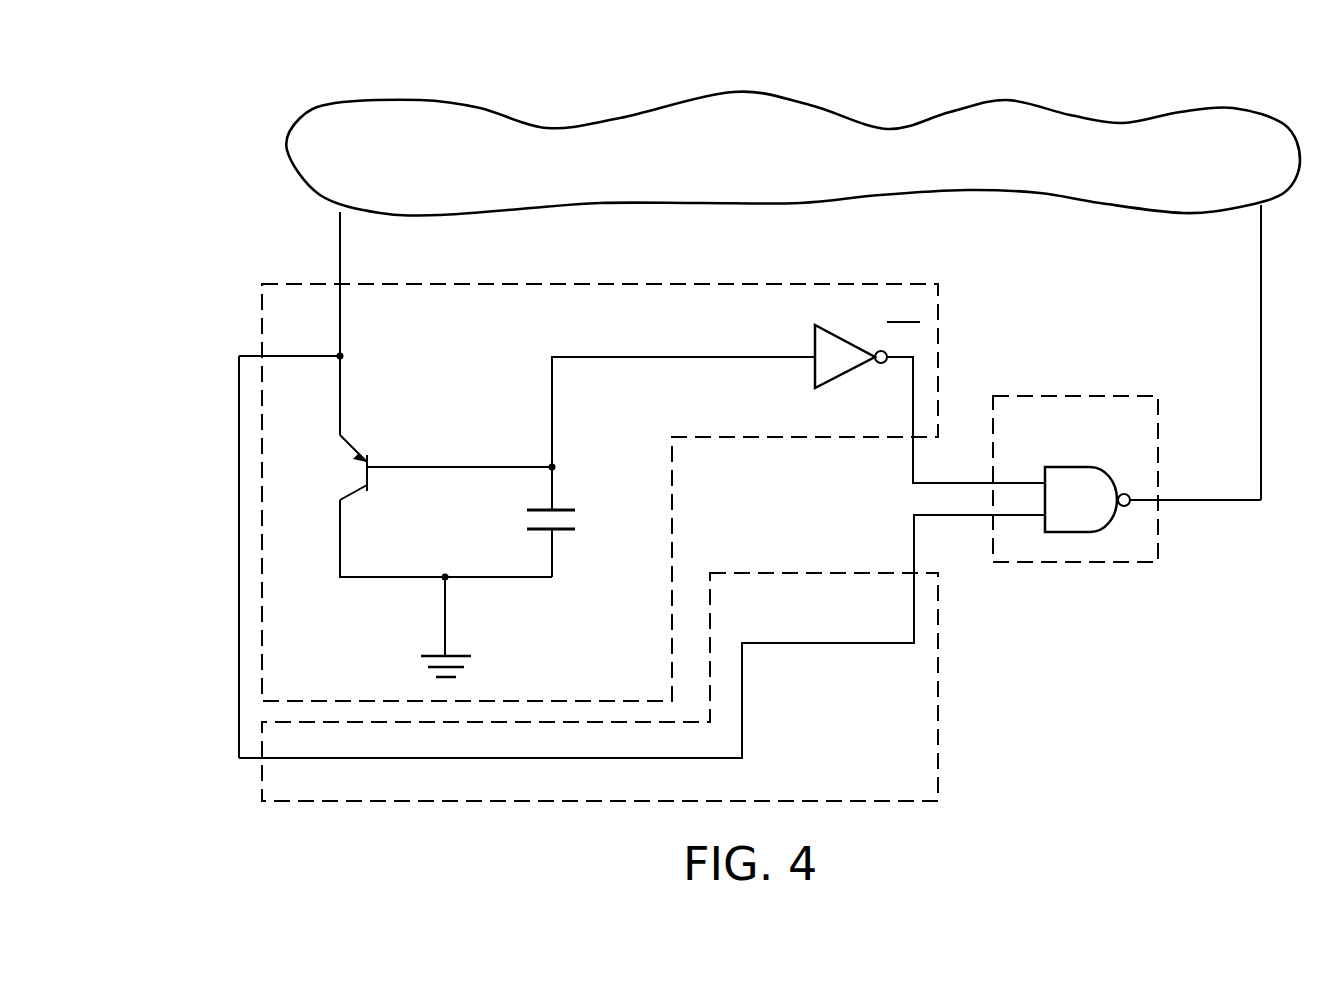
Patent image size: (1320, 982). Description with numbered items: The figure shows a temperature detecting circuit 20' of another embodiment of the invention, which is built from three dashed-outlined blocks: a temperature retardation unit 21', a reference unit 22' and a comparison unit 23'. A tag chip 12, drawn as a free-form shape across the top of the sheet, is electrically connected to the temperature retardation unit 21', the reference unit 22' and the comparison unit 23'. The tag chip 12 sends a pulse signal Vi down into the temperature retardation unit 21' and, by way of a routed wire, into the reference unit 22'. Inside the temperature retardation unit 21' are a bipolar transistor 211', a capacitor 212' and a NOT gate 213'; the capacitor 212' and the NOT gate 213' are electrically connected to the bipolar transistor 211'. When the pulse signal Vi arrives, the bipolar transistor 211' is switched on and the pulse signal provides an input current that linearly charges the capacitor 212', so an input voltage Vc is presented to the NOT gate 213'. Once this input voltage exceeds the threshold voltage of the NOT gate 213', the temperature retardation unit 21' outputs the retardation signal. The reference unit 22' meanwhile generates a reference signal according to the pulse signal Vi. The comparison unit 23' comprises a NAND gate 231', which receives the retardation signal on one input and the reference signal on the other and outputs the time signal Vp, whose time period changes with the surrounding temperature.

The temperature detecting circuit 20' is at (722, 440).
The tag chip 12 is at (755, 168).
The temperature retardation unit 21' is at (635, 492).
The bipolar transistor 211' is at (446, 440).
The capacitor 212' is at (593, 522).
The NOT gate 213' is at (852, 379).
The reference unit 22' is at (635, 687).
The comparison unit 23' is at (1075, 447).
The NAND gate 231' is at (1087, 469).